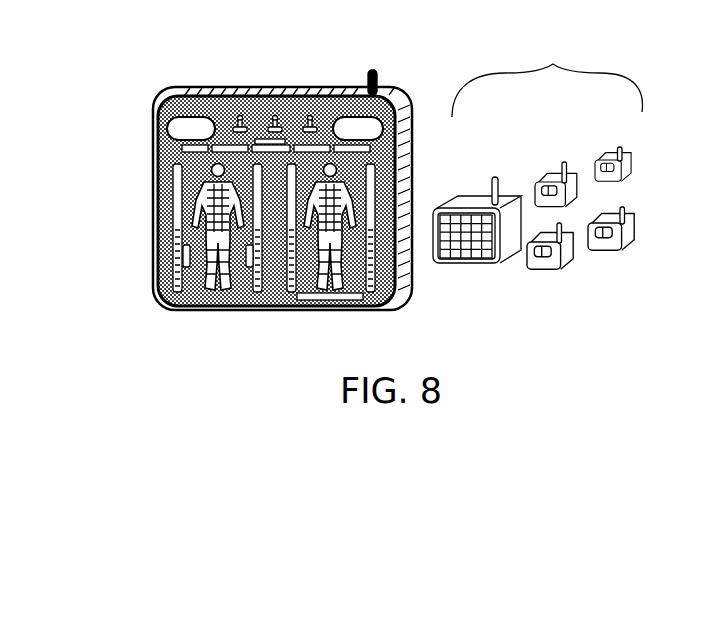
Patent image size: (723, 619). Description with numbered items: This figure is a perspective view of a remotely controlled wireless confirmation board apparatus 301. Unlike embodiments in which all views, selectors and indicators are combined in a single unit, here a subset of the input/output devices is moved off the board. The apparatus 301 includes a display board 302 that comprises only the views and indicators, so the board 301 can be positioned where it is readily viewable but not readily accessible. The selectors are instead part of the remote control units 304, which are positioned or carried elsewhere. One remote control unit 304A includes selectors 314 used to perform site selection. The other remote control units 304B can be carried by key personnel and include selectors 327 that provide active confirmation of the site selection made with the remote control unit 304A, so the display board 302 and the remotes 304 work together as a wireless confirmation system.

The confirmation board apparatus 301 is at (179, 72).
The display board 302 is at (278, 91).
The remote control units 304 is at (547, 77).
The remote control unit 304A is at (473, 193).
The remote control units 304B is at (623, 160).
The selectors 314 is at (468, 261).
The selectors 327 is at (538, 181).